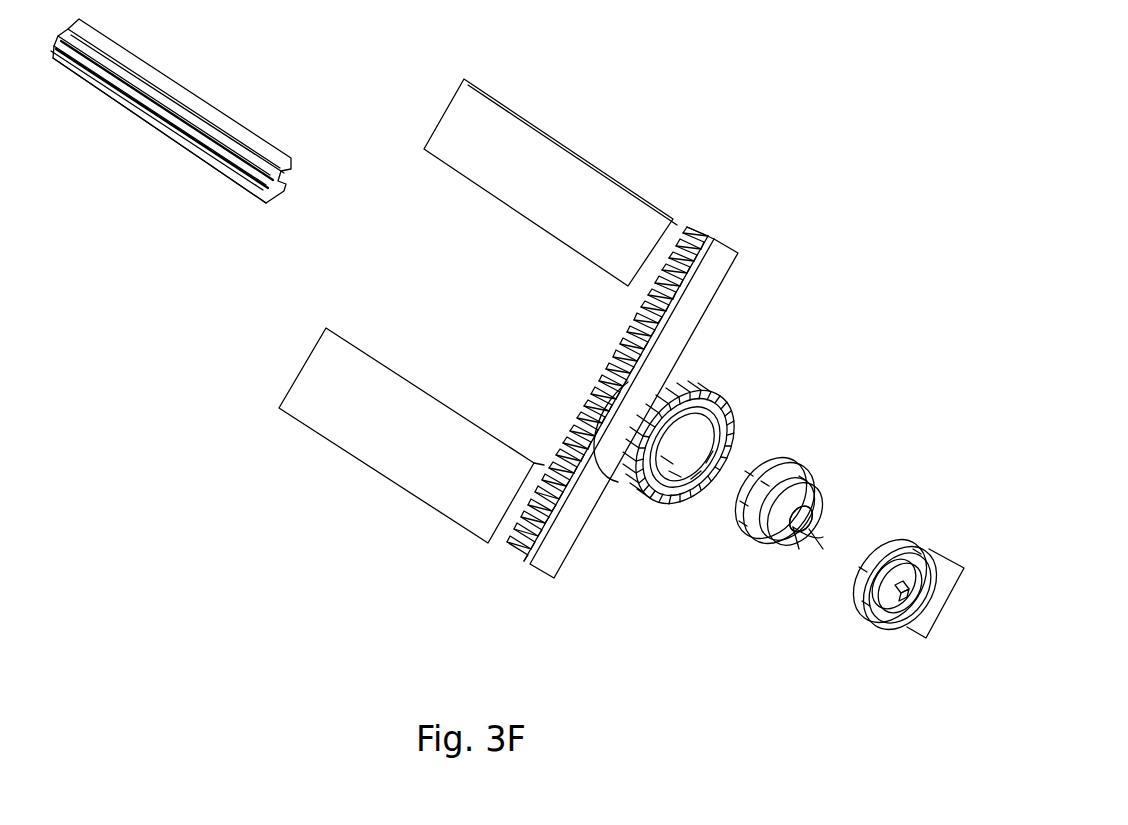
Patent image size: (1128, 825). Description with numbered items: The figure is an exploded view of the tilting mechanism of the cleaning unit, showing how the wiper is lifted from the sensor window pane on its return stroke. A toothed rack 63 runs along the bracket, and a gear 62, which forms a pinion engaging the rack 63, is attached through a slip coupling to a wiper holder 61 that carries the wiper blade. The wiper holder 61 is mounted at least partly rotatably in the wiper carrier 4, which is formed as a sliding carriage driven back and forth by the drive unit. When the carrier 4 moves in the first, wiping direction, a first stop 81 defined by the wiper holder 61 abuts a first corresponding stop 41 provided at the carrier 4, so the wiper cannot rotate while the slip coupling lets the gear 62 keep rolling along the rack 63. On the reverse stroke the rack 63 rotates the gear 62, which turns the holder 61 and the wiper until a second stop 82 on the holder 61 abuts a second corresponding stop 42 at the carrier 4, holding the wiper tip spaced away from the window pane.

The rack 63 is at (688, 238).
The gear 62 is at (731, 386).
The wiper holder 61 is at (822, 452).
The second stop 82 is at (823, 532).
The first stop 81 is at (805, 538).
The wiper carrier 4 is at (915, 625).
The first corresponding stop 41 is at (903, 595).
The second corresponding stop 42 is at (915, 578).